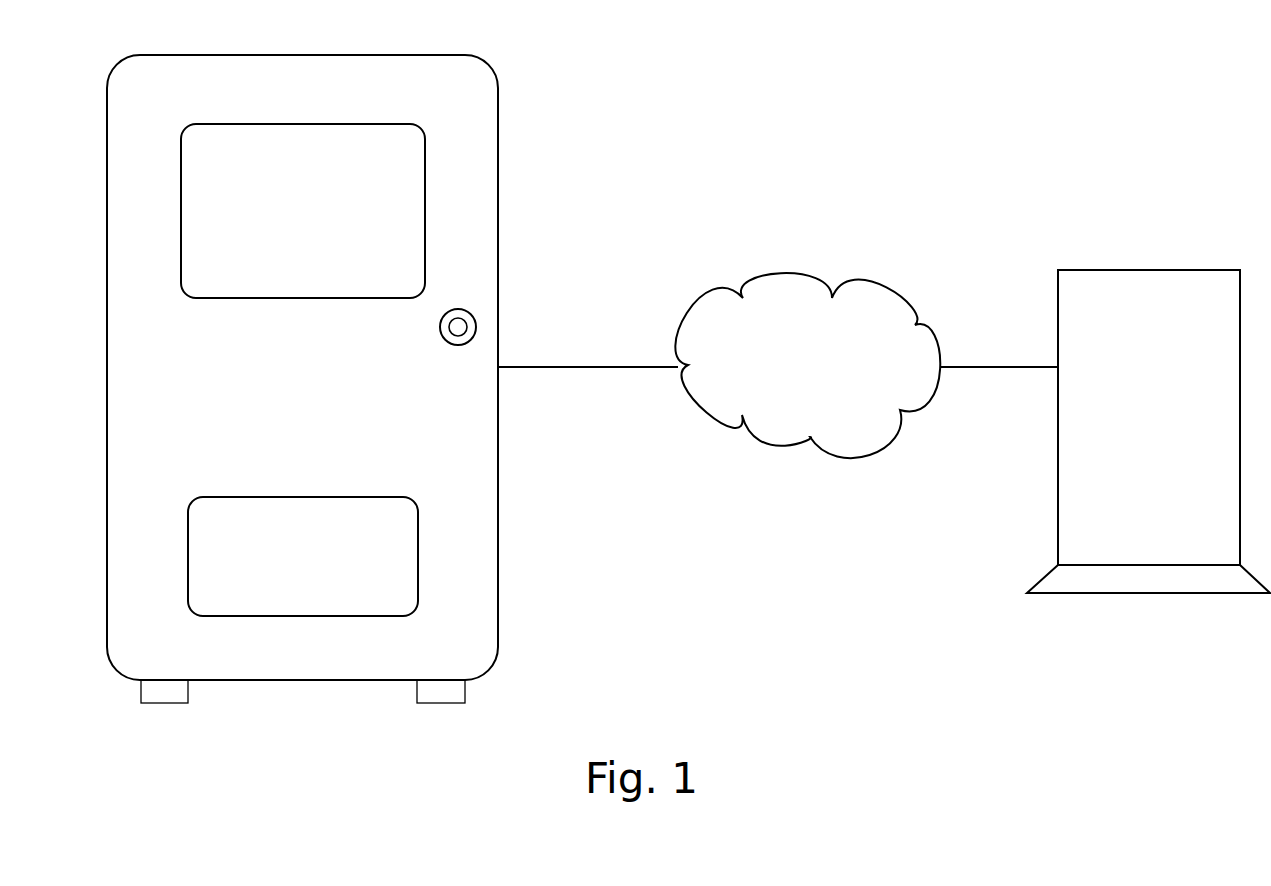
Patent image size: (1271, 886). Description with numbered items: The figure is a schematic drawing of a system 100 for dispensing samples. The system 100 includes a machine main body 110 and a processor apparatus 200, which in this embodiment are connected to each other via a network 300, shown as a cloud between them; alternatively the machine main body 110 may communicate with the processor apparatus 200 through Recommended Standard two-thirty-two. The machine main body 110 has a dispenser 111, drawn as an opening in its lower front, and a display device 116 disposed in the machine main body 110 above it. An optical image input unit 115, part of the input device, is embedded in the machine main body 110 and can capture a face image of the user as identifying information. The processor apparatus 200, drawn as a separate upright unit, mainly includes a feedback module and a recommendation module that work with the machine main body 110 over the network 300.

The system 100 is at (1040, 52).
The machine main body 110 is at (395, 55).
The dispenser 111 is at (392, 565).
The optical image input unit 115 is at (474, 316).
The display device 116 is at (412, 212).
The processor apparatus 200 is at (1178, 270).
The network 300 is at (865, 280).